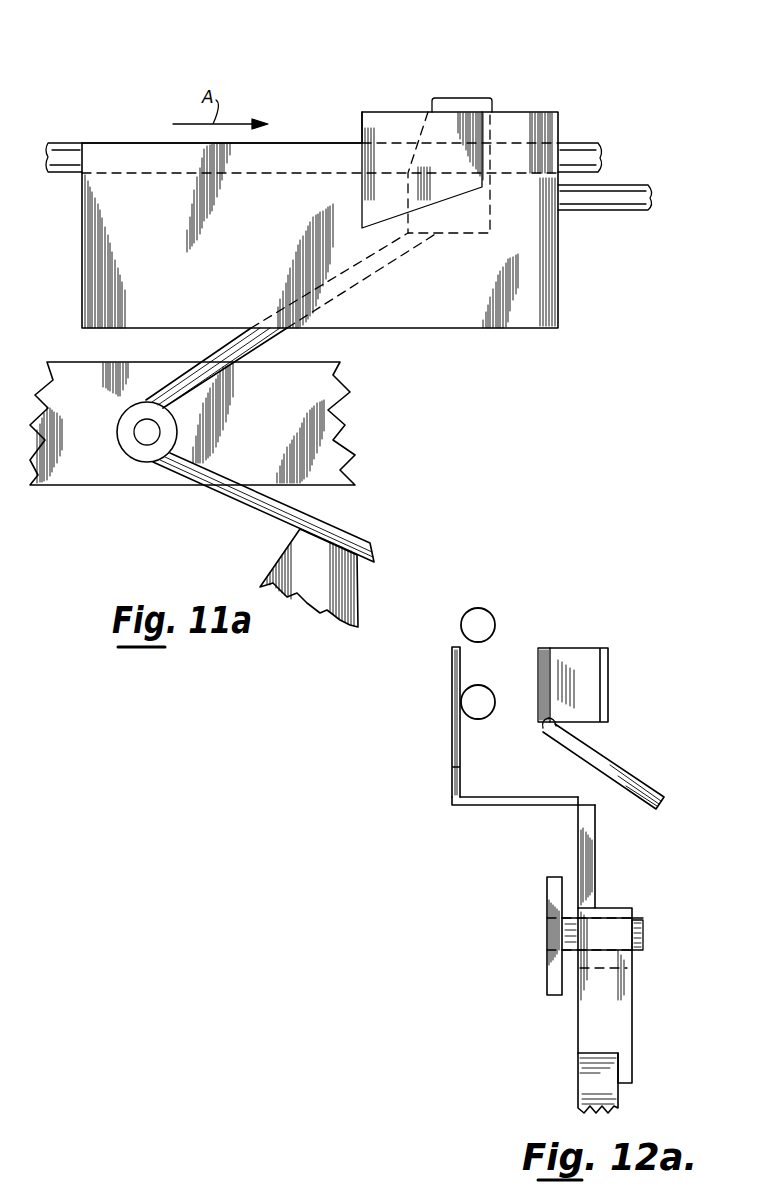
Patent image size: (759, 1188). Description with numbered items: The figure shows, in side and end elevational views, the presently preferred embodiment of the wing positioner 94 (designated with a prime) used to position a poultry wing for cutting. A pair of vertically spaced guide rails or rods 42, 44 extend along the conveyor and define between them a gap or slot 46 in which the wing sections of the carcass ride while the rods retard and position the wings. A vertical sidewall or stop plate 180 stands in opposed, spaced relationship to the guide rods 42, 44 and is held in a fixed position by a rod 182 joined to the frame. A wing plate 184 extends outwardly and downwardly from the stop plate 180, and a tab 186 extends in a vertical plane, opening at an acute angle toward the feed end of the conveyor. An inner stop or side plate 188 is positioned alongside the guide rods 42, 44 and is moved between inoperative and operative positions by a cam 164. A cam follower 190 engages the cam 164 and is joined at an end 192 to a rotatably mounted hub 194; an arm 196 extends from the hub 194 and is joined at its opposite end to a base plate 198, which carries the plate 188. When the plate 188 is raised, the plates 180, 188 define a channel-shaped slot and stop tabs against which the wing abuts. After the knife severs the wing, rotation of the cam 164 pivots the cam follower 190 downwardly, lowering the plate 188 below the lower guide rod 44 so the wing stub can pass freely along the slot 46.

In FIG. 11A, the guide rail 44 is at (55, 143).
In FIG. 12A, the guide rail 44 is at (475, 703).
In FIG. 12A, the guide rail 42 is at (475, 612).
In FIG. 12A, the gap or slot 46 is at (488, 663).
In FIG. 11A, the wing positioner 94 is at (462, 78).
In FIG. 12A, the wing positioner 94 is at (603, 620).
In FIG. 11A, the cam 164 is at (280, 568).
In FIG. 12A, the cam 164 is at (598, 1093).
In FIG. 11A, the vertical sidewall or stop plate 180 is at (297, 145).
In FIG. 12A, the vertical sidewall or stop plate 180 is at (538, 652).
In FIG. 11A, the rod 182 is at (625, 192).
In FIG. 12A, the rod 182 is at (555, 713).
In FIG. 11A, the wing plate 184 is at (120, 222).
In FIG. 12A, the wing plate 184 is at (612, 771).
In FIG. 11A, the tab 186 is at (362, 128).
In FIG. 12A, the tab 186 is at (588, 672).
In FIG. 11A, the inner stop or side plate 188 is at (432, 105).
In FIG. 12A, the inner stop or side plate 188 is at (452, 662).
In FIG. 11A, the cam follower 190 is at (330, 532).
In FIG. 12A, the cam follower 190 is at (612, 1018).
In FIG. 11A, the end 192 is at (207, 492).
In FIG. 11A, the hub 194 is at (127, 438).
In FIG. 12A, the hub 194 is at (610, 913).
In FIG. 11A, the arm 196 is at (225, 350).
In FIG. 12A, the arm 196 is at (597, 855).
In FIG. 12A, the base plate 198 is at (480, 807).